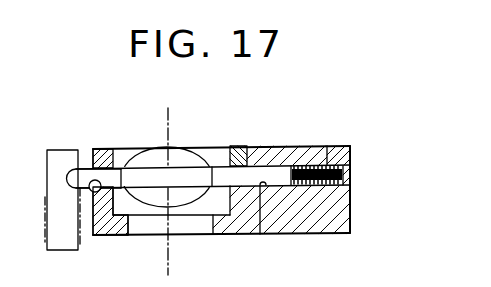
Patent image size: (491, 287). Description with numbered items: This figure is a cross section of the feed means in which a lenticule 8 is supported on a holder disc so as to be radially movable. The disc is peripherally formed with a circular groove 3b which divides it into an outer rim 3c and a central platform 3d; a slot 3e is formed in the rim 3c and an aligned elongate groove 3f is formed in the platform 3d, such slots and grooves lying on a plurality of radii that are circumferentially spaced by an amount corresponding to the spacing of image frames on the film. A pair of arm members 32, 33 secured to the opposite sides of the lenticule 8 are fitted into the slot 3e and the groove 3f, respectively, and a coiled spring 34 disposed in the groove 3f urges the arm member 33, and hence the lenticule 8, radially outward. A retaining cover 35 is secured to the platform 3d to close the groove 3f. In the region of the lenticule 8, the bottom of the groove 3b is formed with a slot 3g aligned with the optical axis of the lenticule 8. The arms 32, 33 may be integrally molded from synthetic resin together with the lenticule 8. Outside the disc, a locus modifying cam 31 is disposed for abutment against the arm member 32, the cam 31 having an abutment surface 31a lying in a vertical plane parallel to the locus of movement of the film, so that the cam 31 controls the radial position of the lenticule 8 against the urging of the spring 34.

The locus modifying cam 31 is at (45, 197).
The abutment surface 31a is at (78, 240).
The arm member 32 is at (84, 168).
The outer rim 3c is at (110, 149).
The lenticule 8 is at (183, 155).
The arm member 33 is at (245, 168).
The retaining cover 35 is at (292, 150).
The coiled spring 34 is at (330, 150).
The slot 3e is at (91, 200).
The slot 3g is at (128, 222).
The circular groove 3b is at (222, 200).
The elongate groove 3f is at (260, 234).
The central platform 3d is at (295, 234).